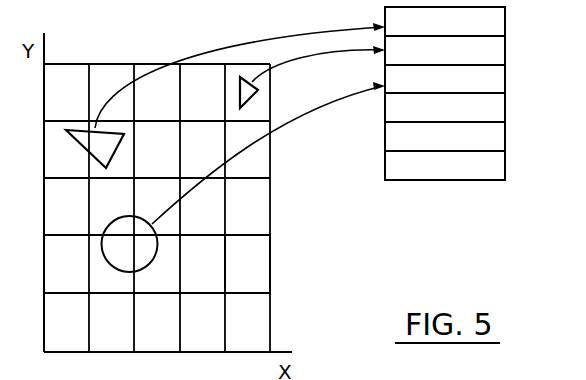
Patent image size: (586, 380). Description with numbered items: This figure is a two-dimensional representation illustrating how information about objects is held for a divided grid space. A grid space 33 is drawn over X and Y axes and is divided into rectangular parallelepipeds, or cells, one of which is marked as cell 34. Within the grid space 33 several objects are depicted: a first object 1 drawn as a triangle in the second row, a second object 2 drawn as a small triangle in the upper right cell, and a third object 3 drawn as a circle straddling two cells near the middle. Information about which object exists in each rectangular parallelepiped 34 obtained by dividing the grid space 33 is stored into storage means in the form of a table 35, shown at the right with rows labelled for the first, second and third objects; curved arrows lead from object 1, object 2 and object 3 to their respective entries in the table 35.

The object 1 (triangle) 1 is at (99, 149).
The object 2 (triangle) 2 is at (253, 97).
The object 3 (circle) 3 is at (130, 244).
The grid space 33 is at (270, 200).
The rectangular parallelepiped (cell) 34 is at (270, 266).
The table 35 is at (446, 180).